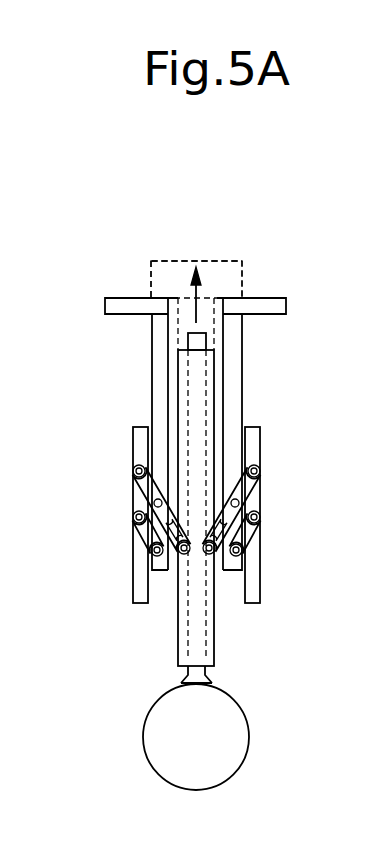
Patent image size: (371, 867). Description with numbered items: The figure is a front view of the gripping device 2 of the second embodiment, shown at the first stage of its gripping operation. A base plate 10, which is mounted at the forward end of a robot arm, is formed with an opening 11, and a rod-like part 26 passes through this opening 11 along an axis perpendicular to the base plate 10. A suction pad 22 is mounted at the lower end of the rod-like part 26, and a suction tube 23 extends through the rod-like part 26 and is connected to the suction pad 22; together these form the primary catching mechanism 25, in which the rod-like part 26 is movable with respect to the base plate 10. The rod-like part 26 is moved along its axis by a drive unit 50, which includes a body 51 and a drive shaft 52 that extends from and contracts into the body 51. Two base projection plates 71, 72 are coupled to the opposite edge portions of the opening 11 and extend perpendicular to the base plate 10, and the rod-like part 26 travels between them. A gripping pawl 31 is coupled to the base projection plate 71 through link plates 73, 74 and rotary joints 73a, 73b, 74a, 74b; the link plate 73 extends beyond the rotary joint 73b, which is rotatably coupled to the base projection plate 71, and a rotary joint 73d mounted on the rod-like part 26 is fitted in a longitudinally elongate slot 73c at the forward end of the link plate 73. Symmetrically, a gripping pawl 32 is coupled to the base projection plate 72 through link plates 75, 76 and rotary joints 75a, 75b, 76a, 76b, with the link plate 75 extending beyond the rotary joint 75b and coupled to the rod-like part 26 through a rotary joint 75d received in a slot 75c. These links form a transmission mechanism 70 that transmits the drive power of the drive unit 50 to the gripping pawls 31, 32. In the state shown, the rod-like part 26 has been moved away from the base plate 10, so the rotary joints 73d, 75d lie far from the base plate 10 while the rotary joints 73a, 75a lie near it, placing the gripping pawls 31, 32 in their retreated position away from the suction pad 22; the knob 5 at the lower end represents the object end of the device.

The gripping device 2 is at (92, 662).
The knob 5 is at (233, 753).
The base plate 10 is at (123, 302).
The opening 11 is at (178, 306).
The suction pad 22 is at (213, 682).
The suction tube 23 is at (198, 340).
The primary catching mechanism 25 is at (312, 712).
The rod-like part 26 is at (210, 365).
The gripping pawl 31 is at (137, 587).
The gripping pawl 32 is at (256, 585).
The drive unit 50 is at (300, 163).
The body 51 is at (202, 261).
The drive shaft 52 is at (215, 318).
The transmission mechanism 70 is at (324, 535).
The base projection plate 71 is at (158, 343).
The base projection plate 72 is at (233, 332).
The link plate 73 is at (133, 477).
The rotary joint 73a is at (140, 464).
The rotary joint 73b is at (131, 483).
The slot 73c is at (153, 463).
The rotary joint 73d is at (186, 556).
The link plate 74 is at (147, 537).
The rotary joint 74a is at (135, 515).
The rotary joint 74b is at (152, 553).
The link plate 75 is at (265, 468).
The rotary joint 75a is at (258, 477).
The rotary joint 75b is at (264, 486).
The slot 75c is at (213, 478).
The rotary joint 75d is at (207, 556).
The link plate 76 is at (247, 534).
The rotary joint 76a is at (258, 514).
The rotary joint 76b is at (242, 554).